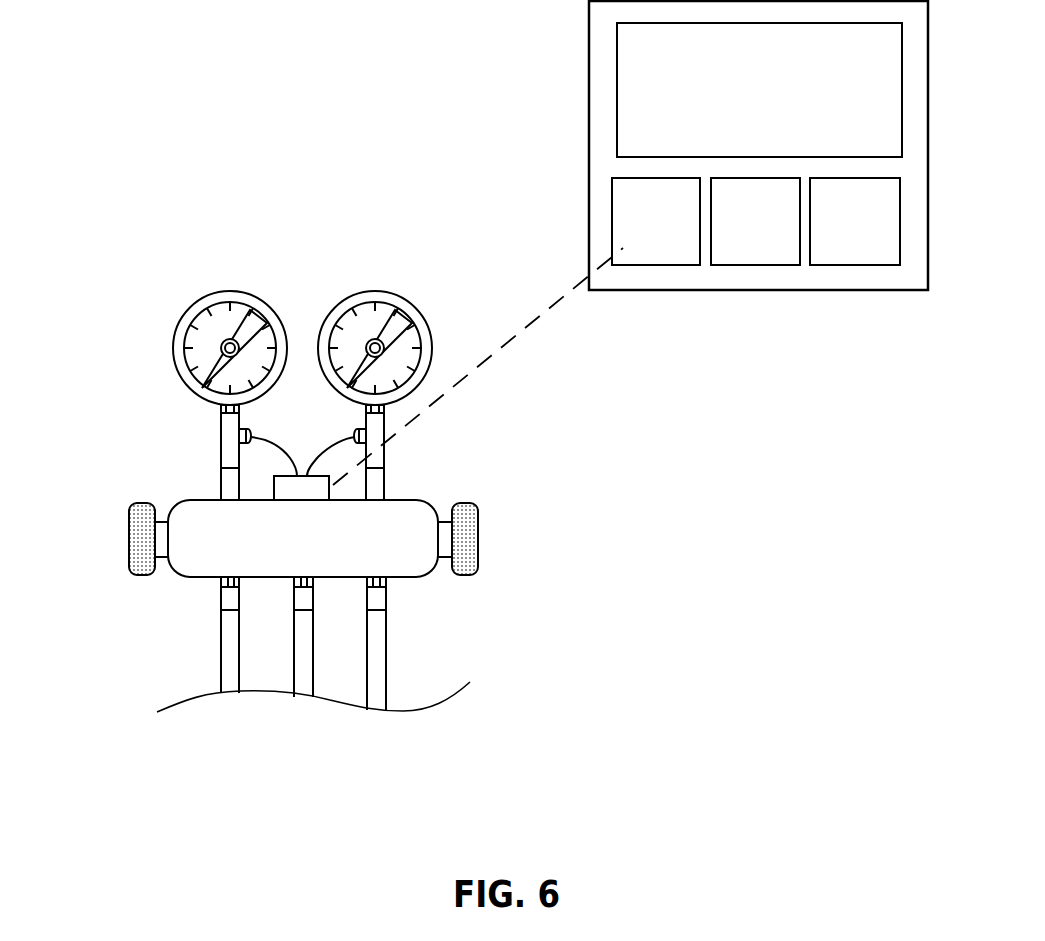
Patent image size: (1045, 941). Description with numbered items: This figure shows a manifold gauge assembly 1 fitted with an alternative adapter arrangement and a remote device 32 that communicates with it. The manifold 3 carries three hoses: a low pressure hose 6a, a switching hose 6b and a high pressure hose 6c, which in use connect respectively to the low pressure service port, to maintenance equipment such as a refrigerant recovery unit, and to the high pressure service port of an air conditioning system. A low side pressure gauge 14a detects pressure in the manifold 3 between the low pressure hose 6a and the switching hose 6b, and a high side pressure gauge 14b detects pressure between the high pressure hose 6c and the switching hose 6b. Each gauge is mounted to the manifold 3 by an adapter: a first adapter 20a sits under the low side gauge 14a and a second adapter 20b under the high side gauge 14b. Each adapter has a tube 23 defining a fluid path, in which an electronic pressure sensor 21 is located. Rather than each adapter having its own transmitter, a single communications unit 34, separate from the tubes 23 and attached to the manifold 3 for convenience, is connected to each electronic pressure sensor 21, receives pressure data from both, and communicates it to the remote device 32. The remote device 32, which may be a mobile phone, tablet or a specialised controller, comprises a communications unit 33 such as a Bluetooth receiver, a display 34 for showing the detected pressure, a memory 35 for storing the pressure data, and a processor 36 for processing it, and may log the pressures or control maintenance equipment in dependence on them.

The manifold gauge assembly 1 is at (108, 272).
The manifold 3 is at (407, 558).
The low pressure hose 6a is at (230, 670).
The switching hose 6b is at (302, 670).
The high pressure hose 6c is at (377, 683).
The low side pressure gauge 14a is at (218, 308).
The high side pressure gauge 14b is at (368, 317).
The first adapter 20a is at (180, 457).
The second adapter 20b is at (452, 473).
The electronic pressure sensor 21 is at (237, 441).
The tube 23 is at (221, 453).
The remote device 32 is at (777, 290).
The communications unit 33 is at (671, 235).
The communications unit 34 is at (297, 488).
The memory 35 is at (771, 235).
The processor 36 is at (871, 235).